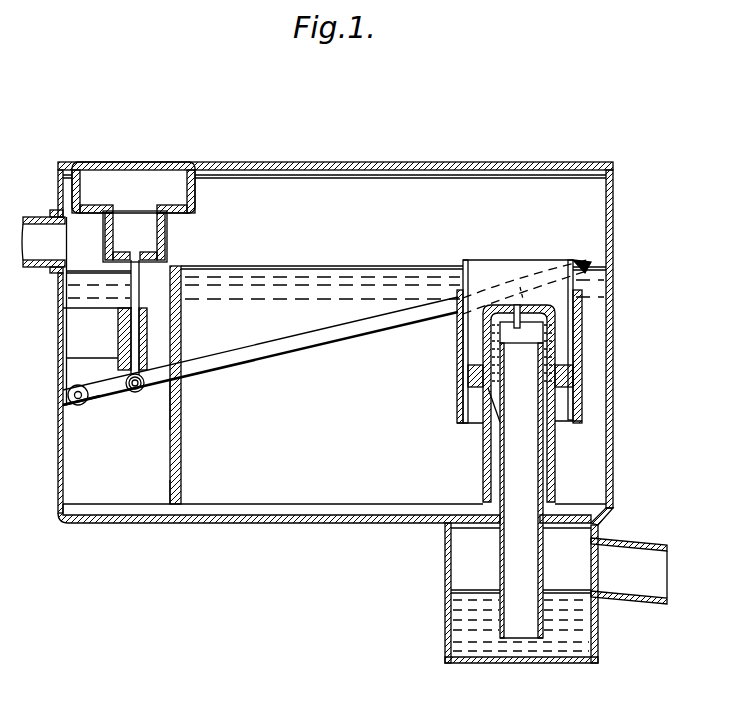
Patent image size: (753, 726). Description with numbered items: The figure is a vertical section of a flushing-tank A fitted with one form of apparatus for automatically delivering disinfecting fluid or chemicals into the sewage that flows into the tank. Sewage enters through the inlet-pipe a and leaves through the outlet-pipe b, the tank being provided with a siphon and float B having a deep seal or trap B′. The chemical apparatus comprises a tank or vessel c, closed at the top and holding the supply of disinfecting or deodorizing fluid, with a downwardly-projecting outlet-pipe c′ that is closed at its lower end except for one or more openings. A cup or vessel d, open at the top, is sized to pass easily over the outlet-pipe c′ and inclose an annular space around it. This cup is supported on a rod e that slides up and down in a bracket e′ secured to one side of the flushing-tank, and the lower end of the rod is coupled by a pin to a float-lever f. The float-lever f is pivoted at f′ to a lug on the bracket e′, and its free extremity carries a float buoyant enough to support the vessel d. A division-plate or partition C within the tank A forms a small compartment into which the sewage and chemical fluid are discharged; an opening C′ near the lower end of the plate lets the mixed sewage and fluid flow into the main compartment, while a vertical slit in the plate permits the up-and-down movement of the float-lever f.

The flushing-tank A is at (613, 366).
The inlet-pipe a is at (43, 241).
The tank or vessel c is at (133, 187).
The outlet-pipe c′ is at (135, 236).
The cup or vessel d is at (173, 233).
The rod e is at (140, 292).
The bracket e′ is at (118, 317).
The division-plate or partition C is at (181, 336).
The opening C′ is at (180, 512).
The float-lever f is at (287, 350).
The pivot f′ is at (98, 404).
The siphon and float B is at (457, 385).
The deep seal or trap B′ is at (521, 484).
The outlet-pipe b is at (629, 571).